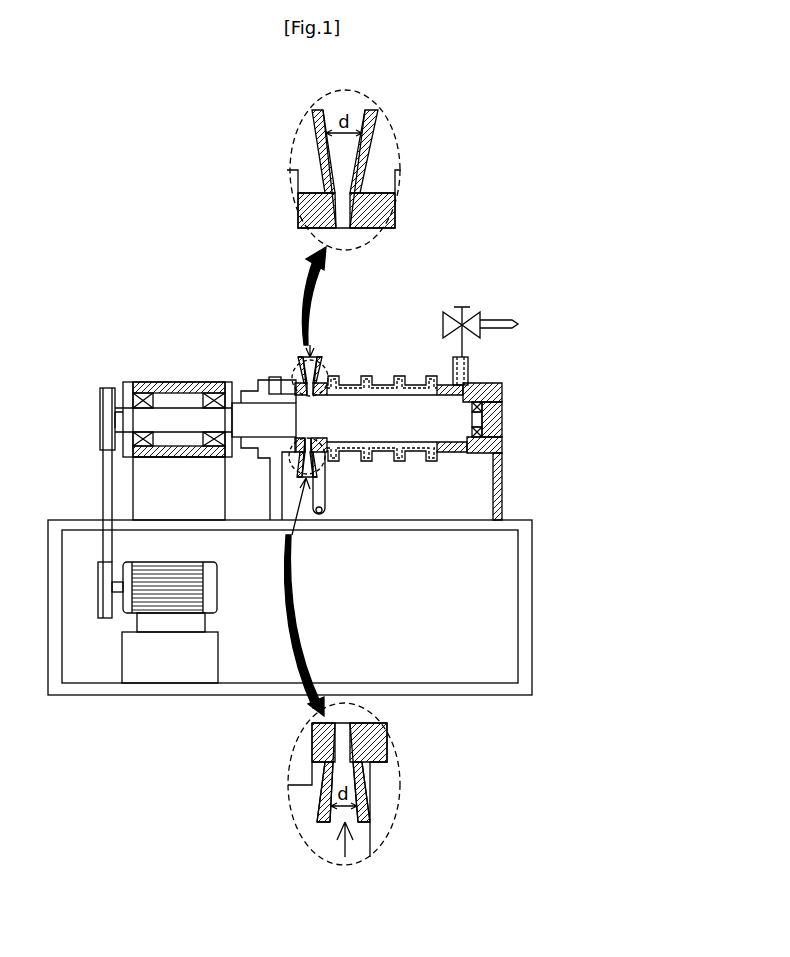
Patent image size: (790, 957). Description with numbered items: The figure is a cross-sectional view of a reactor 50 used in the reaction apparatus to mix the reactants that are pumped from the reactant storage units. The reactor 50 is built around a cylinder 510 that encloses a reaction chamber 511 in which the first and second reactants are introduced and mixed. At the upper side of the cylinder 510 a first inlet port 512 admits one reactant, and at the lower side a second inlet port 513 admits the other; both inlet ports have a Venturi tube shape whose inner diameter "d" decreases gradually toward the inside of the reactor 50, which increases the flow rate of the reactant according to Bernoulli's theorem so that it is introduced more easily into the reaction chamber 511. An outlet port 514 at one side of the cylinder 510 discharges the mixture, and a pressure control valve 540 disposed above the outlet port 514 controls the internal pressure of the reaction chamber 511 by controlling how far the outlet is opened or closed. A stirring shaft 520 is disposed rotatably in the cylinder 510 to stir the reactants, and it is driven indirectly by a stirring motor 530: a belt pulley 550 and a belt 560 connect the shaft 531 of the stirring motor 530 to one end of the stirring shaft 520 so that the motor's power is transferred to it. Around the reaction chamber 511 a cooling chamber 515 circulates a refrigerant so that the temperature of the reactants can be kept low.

The reactor 50 is at (540, 407).
The cylinder 510 is at (272, 300).
The reaction chamber 511 is at (280, 383).
The first inlet port 512 is at (300, 383).
The second inlet port 513 is at (173, 380).
The outlet port 514 is at (470, 379).
The cooling chamber 515 is at (403, 393).
The stirring shaft 520 is at (390, 415).
The stirring motor 530 is at (215, 587).
The shaft of the stirring motor 531 is at (118, 592).
The pressure control valve 540 is at (470, 312).
The belt pulley 550 is at (100, 433).
The belt 560 is at (103, 483).